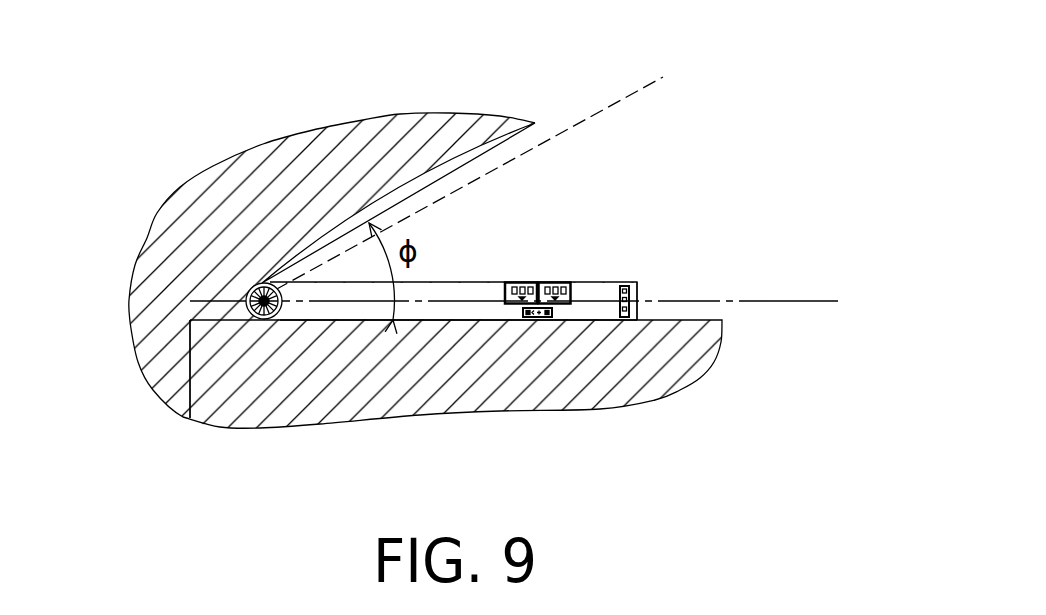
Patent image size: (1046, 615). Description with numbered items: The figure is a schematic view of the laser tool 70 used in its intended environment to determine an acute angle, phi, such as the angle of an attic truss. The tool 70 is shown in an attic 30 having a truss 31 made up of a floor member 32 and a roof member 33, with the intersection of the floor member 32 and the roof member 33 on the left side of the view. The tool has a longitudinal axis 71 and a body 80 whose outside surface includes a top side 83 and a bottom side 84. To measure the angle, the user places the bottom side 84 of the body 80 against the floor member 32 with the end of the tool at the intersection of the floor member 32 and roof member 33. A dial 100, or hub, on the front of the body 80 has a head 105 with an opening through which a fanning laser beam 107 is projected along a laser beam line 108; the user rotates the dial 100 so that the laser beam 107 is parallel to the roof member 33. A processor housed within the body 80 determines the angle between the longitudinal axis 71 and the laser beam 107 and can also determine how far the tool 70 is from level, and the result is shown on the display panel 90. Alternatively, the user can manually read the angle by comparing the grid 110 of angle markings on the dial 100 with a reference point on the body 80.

The attic 30 is at (395, 117).
The truss 31 is at (514, 134).
The floor member 32 is at (640, 323).
The roof member 33 is at (560, 135).
The laser tool 70 is at (582, 260).
The longitudinal axis 71 is at (660, 300).
The body 80 is at (440, 280).
The top side 83 is at (605, 280).
The bottom side 84 is at (440, 321).
The display panel 90 is at (535, 281).
The dial 100 is at (247, 293).
The head 105 is at (246, 297).
The laser beam 107 is at (480, 181).
The laser beam line 108 is at (527, 153).
The grid 110 is at (258, 290).